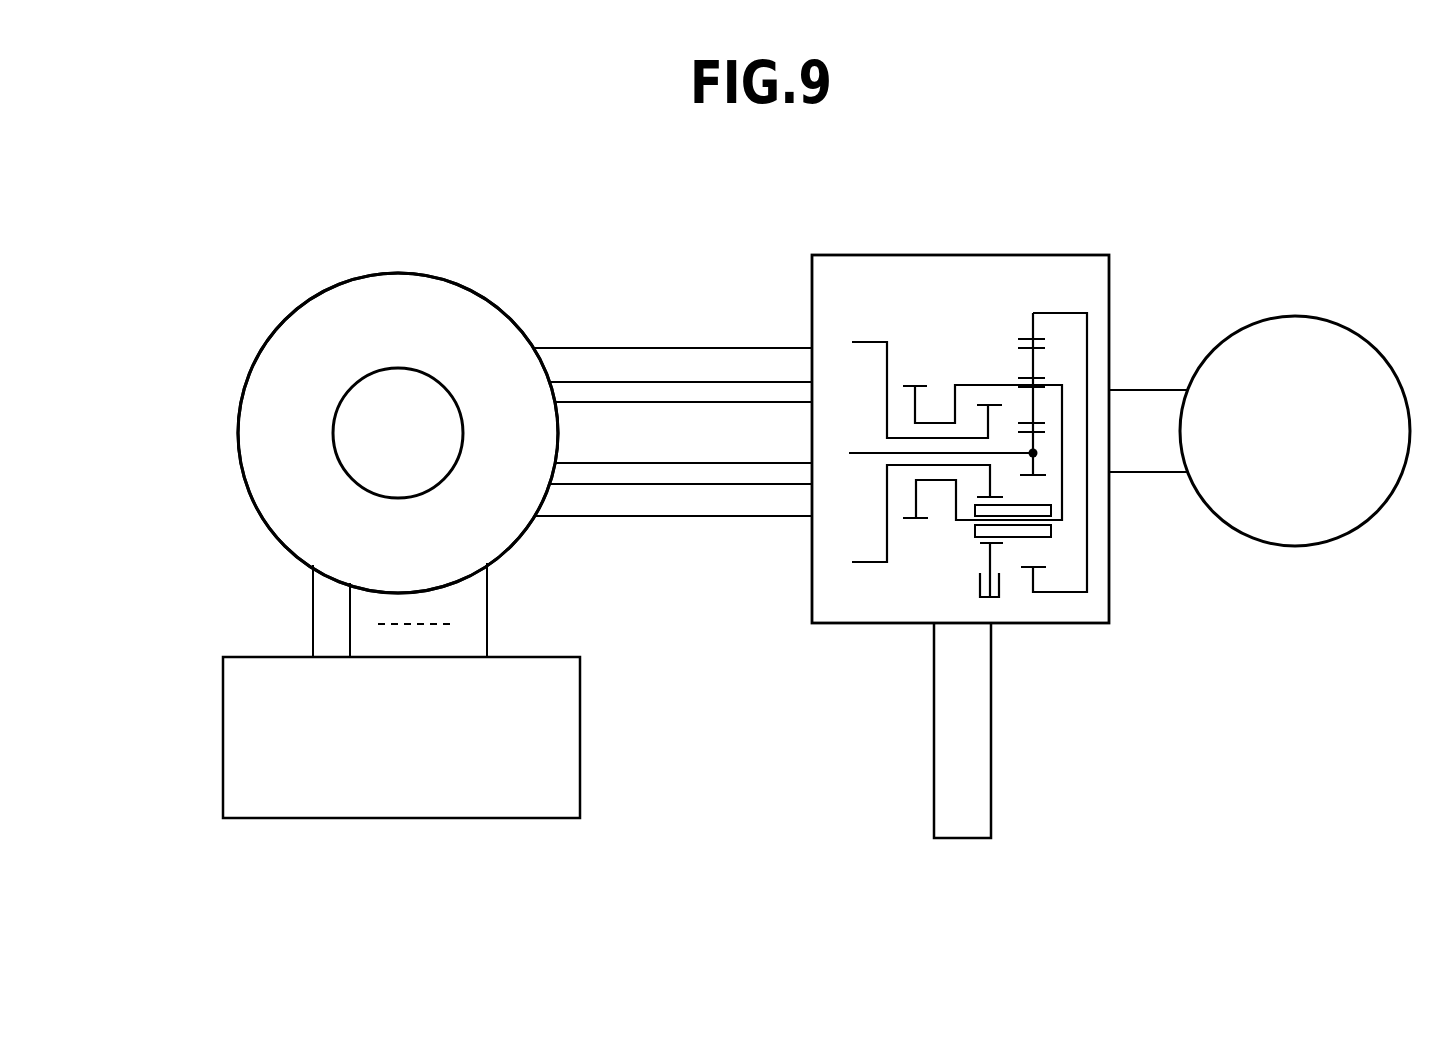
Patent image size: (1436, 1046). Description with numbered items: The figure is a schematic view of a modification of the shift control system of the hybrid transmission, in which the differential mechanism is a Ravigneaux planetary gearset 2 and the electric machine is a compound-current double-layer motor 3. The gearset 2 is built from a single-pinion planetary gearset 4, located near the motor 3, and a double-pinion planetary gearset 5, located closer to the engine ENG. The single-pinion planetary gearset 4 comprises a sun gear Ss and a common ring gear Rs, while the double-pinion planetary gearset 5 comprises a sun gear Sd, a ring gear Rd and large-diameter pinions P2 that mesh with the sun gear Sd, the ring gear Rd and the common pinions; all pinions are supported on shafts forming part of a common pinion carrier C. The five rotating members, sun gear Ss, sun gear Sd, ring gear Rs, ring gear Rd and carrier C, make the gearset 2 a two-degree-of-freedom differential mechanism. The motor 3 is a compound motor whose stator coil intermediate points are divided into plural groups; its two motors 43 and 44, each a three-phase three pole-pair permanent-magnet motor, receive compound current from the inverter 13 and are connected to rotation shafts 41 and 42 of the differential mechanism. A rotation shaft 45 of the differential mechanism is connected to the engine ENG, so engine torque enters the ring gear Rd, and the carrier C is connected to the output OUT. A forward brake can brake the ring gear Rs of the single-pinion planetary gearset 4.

The Ravigneaux planetary gearset 2 is at (1045, 310).
The compound-current double-layer motor 3 is at (268, 317).
The single-pinion planetary gearset 4 is at (980, 368).
The double-pinion planetary gearset 5 is at (1063, 331).
The inverter 13 is at (582, 738).
The rotation shaft 41 is at (637, 443).
The rotation shaft 42 is at (770, 367).
The motor 43 is at (343, 469).
The motor 44 is at (243, 385).
The rotation shaft 45 is at (1163, 455).
The ring gear Rd is at (1028, 337).
The sun gear Ss is at (978, 405).
The large-diameter pinions P2 is at (1046, 353).
The common pinion carrier C is at (1064, 408).
The sun gear Sd is at (1042, 477).
The common ring gear Rs is at (980, 543).
The output OUT is at (973, 785).
The engine ENG is at (1295, 318).